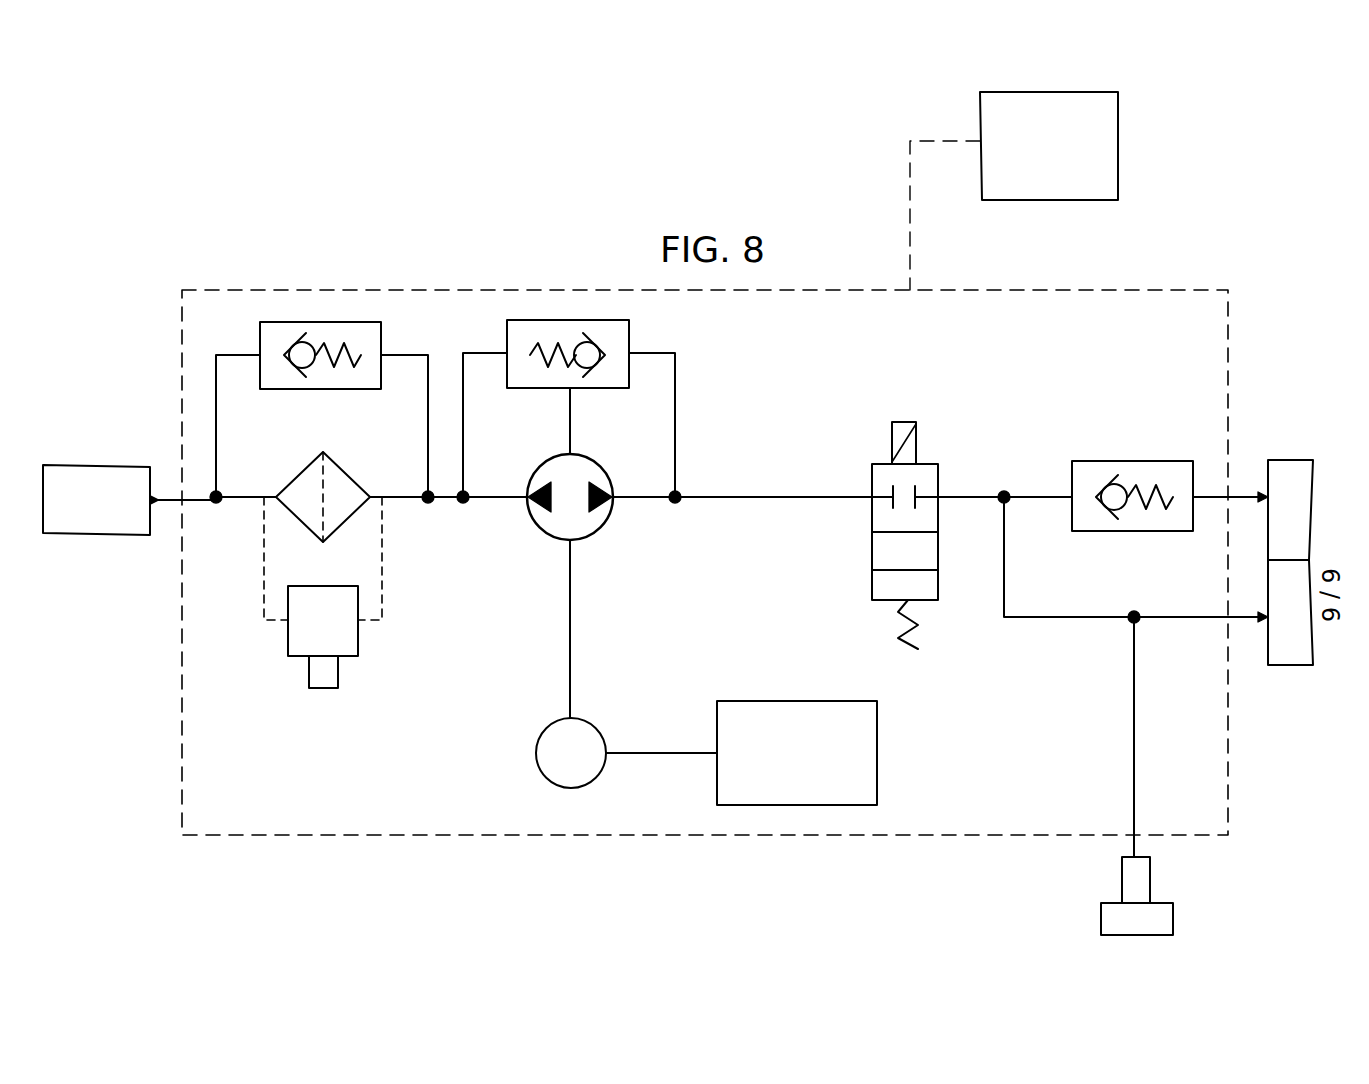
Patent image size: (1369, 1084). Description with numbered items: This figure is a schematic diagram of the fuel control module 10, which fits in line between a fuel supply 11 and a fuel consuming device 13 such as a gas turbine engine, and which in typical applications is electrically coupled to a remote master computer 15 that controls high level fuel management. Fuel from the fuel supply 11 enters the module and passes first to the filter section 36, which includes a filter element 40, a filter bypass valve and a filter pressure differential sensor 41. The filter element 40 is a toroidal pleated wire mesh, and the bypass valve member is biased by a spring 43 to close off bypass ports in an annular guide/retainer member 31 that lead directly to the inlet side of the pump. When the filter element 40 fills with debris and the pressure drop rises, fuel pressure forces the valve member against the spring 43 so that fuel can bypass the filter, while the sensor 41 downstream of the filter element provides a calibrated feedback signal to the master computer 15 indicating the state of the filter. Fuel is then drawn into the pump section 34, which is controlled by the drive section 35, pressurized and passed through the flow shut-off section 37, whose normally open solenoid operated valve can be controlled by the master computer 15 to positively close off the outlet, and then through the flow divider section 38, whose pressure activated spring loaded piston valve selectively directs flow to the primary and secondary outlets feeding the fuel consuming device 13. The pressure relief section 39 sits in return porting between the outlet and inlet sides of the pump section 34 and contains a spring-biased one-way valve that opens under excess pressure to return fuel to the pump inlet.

The fuel control module 10 is at (1010, 288).
The fuel supply 11 is at (80, 538).
The fuel consuming device 13 is at (1313, 462).
The engine control unit 15 is at (1118, 137).
The annular guide/retainer member 31 is at (322, 409).
The spring 43 is at (330, 389).
The pump section 34 is at (604, 540).
The drive section 35 is at (706, 690).
The filter section 36 is at (349, 372).
The flow shut-off section 37 is at (942, 468).
The flow divider section 38 is at (1112, 442).
The pressure relief section 39 is at (650, 336).
The filter element 40 is at (348, 475).
The filter pressure differential sensor 41 is at (358, 642).